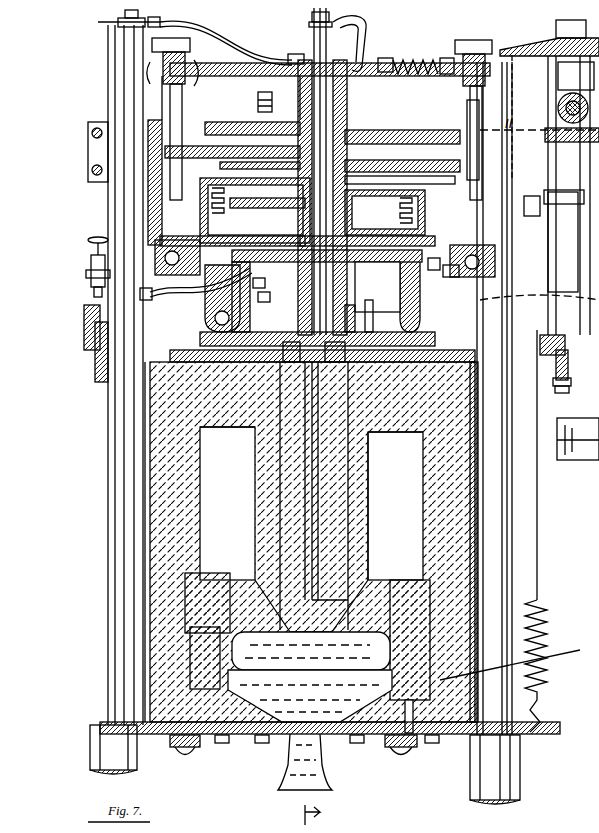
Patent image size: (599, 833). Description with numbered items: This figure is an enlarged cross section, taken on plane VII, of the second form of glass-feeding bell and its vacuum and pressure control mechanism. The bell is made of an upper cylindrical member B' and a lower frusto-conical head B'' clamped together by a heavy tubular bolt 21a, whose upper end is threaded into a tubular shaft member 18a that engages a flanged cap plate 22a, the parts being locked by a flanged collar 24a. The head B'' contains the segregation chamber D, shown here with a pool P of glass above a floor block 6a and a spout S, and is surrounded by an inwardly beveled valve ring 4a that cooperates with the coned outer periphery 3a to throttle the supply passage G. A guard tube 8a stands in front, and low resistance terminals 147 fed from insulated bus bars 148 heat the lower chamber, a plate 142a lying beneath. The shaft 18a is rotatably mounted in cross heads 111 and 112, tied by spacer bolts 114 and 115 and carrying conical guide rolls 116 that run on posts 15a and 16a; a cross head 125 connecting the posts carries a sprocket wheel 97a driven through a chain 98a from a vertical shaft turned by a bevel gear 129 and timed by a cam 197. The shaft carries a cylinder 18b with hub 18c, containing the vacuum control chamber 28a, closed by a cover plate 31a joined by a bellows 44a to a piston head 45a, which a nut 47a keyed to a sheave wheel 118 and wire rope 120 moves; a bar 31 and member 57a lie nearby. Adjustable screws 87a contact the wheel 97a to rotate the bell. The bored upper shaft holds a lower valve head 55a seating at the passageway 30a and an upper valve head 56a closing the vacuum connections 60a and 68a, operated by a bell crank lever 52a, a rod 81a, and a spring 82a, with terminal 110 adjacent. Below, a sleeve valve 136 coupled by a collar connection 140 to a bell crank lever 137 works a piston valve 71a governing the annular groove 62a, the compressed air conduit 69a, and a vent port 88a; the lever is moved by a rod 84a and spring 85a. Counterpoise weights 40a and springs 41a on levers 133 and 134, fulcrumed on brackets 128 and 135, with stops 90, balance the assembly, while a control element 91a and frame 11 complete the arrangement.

The post 16a is at (108, 520).
The vacuum pump connection 68a is at (108, 26).
The cross head 125 is at (108, 124).
The sub-atmospheric control element 91a is at (97, 237).
The counterweight lever 134 is at (88, 327).
The side post bracket 128 is at (102, 380).
The guard tube 8a is at (262, 482).
The tubular bolt 21a is at (322, 470).
The cap plate 22a is at (297, 362).
The flanged collar 24a is at (340, 362).
The upper cylindrical bell member B' is at (356, 556).
The supply passage G is at (250, 600).
The valve ring 4a is at (205, 585).
The coned outer periphery 3a is at (212, 640).
The segregation chamber D is at (311, 651).
The lower frusto-conical bell head B'' is at (279, 655).
The pool P is at (310, 696).
The floor block 6a is at (284, 683).
The low resistance terminal 147 is at (100, 668).
The plate 142a is at (322, 355).
The insulated bus bar 148 is at (187, 752).
The spout S is at (305, 762).
The section plane VII is at (323, 815).
The tubular shaft member 18a is at (348, 118).
The sprocket wheel 97a is at (240, 126).
The spacer bolt 114 is at (186, 100).
The sheave wheel 118 is at (260, 163).
The shaft cylinder 18b is at (225, 186).
The metallic bellows 44a is at (255, 210).
The cover plate 31a is at (370, 160).
The vacuum control chamber 28a is at (244, 227).
The bar 57a is at (232, 234).
The chain 98a is at (455, 134).
The wire rope 120 is at (400, 174).
The rotatable nut 47a is at (385, 212).
The piston head 45a is at (404, 208).
The lower valve head 55a is at (330, 236).
The annular groove 62a is at (352, 270).
The hub 18c is at (377, 287).
The groove and pivoted collar connection 140 is at (235, 320).
The passageway 30a is at (272, 326).
The sleeve valve 136 is at (350, 306).
The bell crank lever 137 is at (370, 304).
The lower cross head 111 is at (202, 259).
The upper valve head 56a is at (312, 42).
The vacuum pump connection 60a is at (292, 54).
The bell crank lever 52a is at (367, 34).
The spring 82a is at (418, 60).
The rod 81a is at (448, 60).
The adjustable screw 87a is at (260, 104).
The bar 31 is at (288, 81).
The upper cross head 112 is at (212, 62).
The terminal 110 is at (172, 38).
The conical guide roll 116 is at (478, 55).
The spacer bolt 115 is at (468, 112).
The rod 84a is at (436, 270).
The spring 85a is at (452, 277).
The atmospheric vent port 88a is at (248, 280).
The piston valve 71a is at (260, 296).
The compressed air conduit 69a is at (180, 288).
The bevel gear 129 is at (540, 48).
The cam 197 is at (557, 106).
The block 135 is at (569, 328).
The counterweight lever 133 is at (576, 365).
The nut 90 is at (566, 376).
The counterpoise weight 40a is at (580, 460).
The post 15a is at (515, 556).
The counterpoise spring 41a is at (547, 618).
The frame 11 is at (594, 565).